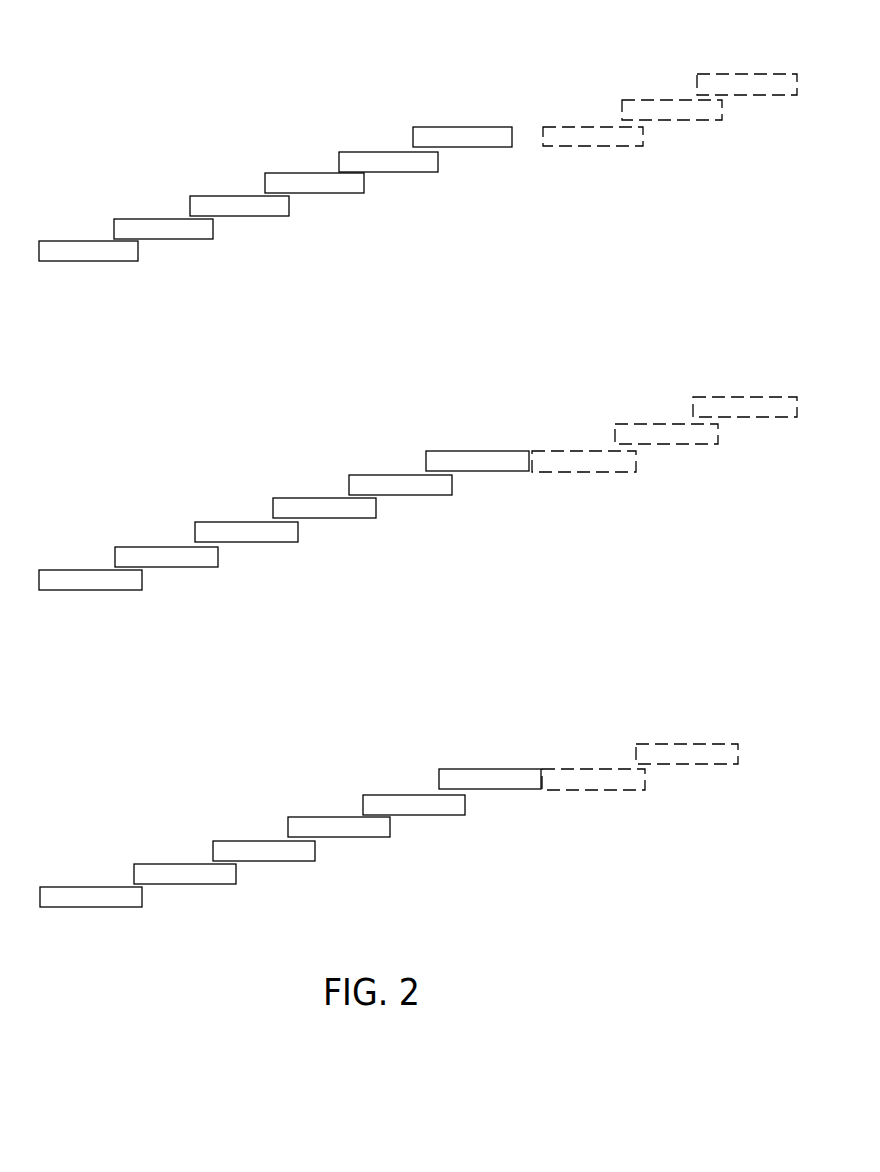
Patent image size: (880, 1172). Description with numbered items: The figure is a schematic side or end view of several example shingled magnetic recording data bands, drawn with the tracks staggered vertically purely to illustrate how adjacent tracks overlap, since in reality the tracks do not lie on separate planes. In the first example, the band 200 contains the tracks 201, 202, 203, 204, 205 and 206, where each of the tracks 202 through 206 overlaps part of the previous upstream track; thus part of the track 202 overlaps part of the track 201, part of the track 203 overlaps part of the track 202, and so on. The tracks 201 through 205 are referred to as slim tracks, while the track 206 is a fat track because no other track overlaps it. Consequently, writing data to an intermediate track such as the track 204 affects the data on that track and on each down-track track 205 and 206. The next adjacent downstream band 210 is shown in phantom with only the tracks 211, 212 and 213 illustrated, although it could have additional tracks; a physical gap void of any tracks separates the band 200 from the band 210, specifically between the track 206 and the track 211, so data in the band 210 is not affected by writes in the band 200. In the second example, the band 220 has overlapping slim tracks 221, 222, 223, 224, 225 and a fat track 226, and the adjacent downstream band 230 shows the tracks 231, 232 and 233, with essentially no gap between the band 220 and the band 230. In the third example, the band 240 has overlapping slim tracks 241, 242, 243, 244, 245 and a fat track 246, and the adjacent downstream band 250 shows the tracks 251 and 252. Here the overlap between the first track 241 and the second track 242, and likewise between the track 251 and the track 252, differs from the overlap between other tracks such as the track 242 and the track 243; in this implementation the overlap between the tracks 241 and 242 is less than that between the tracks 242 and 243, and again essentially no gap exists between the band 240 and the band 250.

The band 200 is at (173, 161).
The track 201 is at (89, 261).
The track 202 is at (164, 239).
The track 203 is at (240, 216).
The track 204 is at (315, 193).
The track 205 is at (389, 172).
The fat track 206 is at (463, 147).
The band 210 is at (700, 156).
The track 211 is at (590, 127).
The track 212 is at (671, 100).
The track 213 is at (762, 74).
The band 220 is at (175, 489).
The slim track 221 is at (89, 590).
The slim track 222 is at (165, 567).
The slim track 223 is at (245, 542).
The slim track 224 is at (323, 518).
The slim track 225 is at (399, 495).
The fat track 226 is at (476, 471).
The band 230 is at (682, 488).
The track 231 is at (582, 451).
The track 232 is at (665, 424).
The track 233 is at (740, 397).
The band 240 is at (204, 798).
The first track 241 is at (90, 907).
The second track 242 is at (184, 884).
The track 243 is at (263, 861).
The slim track 244 is at (338, 837).
The slim track 245 is at (413, 815).
The fat track 246 is at (489, 789).
The band 250 is at (674, 831).
The track 251 is at (592, 769).
The track 252 is at (687, 744).